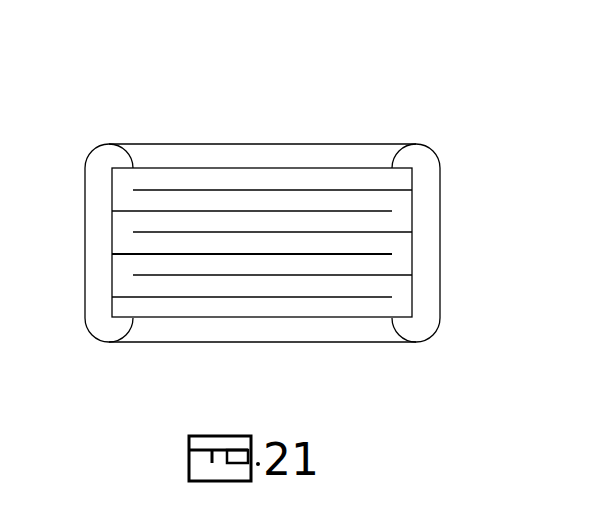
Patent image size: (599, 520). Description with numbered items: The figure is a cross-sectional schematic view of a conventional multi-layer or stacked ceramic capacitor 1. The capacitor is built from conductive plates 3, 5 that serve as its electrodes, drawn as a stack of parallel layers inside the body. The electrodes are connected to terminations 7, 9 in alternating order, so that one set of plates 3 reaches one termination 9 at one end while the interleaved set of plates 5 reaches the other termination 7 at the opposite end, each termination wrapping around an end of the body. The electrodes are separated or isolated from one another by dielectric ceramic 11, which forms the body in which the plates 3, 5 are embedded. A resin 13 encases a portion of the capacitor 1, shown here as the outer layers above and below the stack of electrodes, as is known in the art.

The multi-layer ceramic capacitor 1 is at (437, 119).
The conductive plate 3 is at (402, 190).
The conductive plate 5 is at (125, 212).
The termination 7 is at (93, 240).
The termination 9 is at (423, 255).
The dielectric ceramic 11 is at (127, 230).
The resin 13 is at (277, 158).